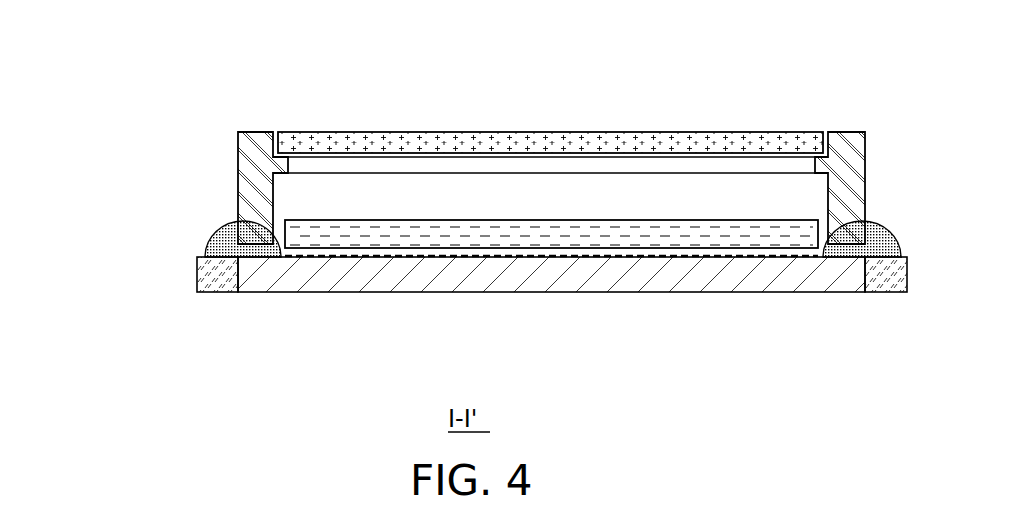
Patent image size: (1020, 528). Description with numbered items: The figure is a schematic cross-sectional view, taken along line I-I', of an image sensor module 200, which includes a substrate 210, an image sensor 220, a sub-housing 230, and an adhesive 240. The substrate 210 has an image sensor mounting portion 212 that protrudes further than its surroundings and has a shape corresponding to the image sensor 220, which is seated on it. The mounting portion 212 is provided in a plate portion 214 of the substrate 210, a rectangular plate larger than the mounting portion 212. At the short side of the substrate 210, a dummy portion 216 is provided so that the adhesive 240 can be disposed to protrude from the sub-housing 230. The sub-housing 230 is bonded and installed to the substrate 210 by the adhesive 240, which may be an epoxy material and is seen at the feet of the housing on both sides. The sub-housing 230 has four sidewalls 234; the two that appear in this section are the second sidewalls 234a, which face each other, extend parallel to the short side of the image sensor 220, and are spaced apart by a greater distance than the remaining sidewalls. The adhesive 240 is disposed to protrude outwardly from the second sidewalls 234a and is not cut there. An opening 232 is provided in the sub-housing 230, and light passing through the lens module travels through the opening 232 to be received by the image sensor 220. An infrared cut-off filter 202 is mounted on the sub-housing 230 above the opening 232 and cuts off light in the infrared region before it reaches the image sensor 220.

The image sensor module 200 is at (342, 33).
The infrared cut-off filter 202 is at (470, 138).
The substrate 210 is at (552, 327).
The image sensor mounting portion 212 is at (275, 350).
The plate portion 214 is at (387, 283).
The dummy portion 216 is at (220, 278).
The image sensor 220 is at (552, 242).
The sub-housing 230 is at (452, 188).
The opening 232 is at (556, 164).
The sidewalls 234 is at (164, 188).
The second sidewalls 234a is at (258, 198).
The adhesive 240 is at (213, 240).